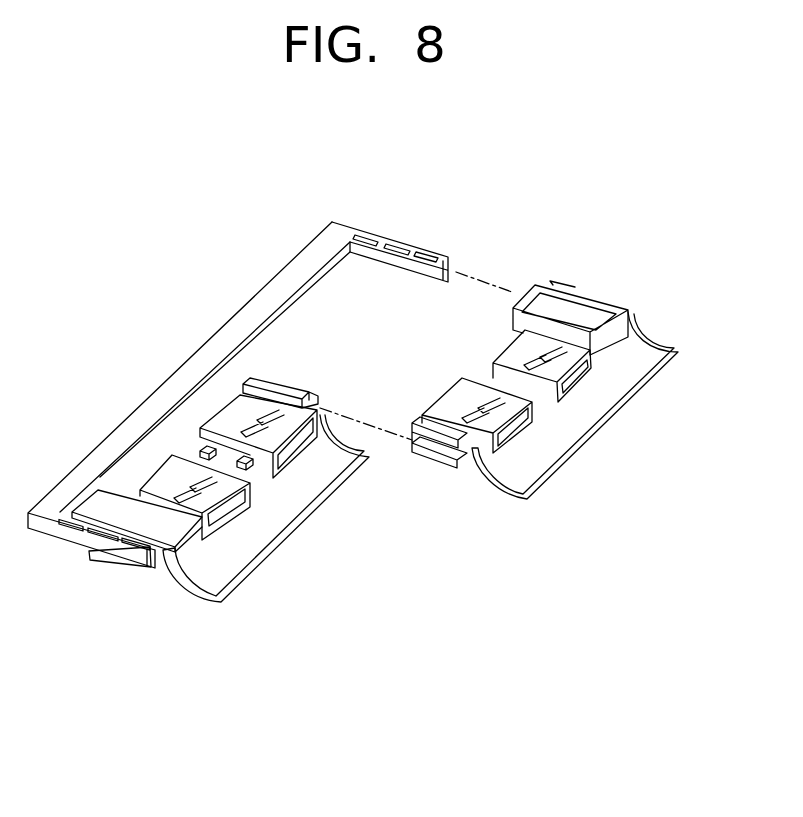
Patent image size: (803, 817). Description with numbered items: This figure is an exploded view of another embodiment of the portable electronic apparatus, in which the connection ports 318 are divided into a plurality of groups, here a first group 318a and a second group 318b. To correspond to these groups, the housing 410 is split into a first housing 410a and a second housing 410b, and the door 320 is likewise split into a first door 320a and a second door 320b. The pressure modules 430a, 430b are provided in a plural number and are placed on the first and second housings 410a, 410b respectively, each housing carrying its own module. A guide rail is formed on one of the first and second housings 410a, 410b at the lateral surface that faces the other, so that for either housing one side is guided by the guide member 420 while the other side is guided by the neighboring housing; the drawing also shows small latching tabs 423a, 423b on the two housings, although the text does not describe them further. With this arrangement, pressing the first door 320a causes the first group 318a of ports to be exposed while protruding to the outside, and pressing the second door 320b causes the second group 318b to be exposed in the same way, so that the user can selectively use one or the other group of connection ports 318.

The connection ports 318 is at (253, 346).
The first group 318a is at (220, 393).
The second group 318b is at (432, 380).
The guide member 420 is at (157, 382).
The pressure module 430a is at (124, 497).
The pressure module 430b is at (573, 300).
The first latching tab 423a is at (410, 437).
The second latching tab 423b is at (283, 396).
The housing 410 is at (365, 487).
The first housing 410a is at (266, 480).
The second housing 410b is at (465, 457).
The door 320 is at (420, 539).
The first door 320a is at (254, 575).
The second door 320b is at (523, 507).